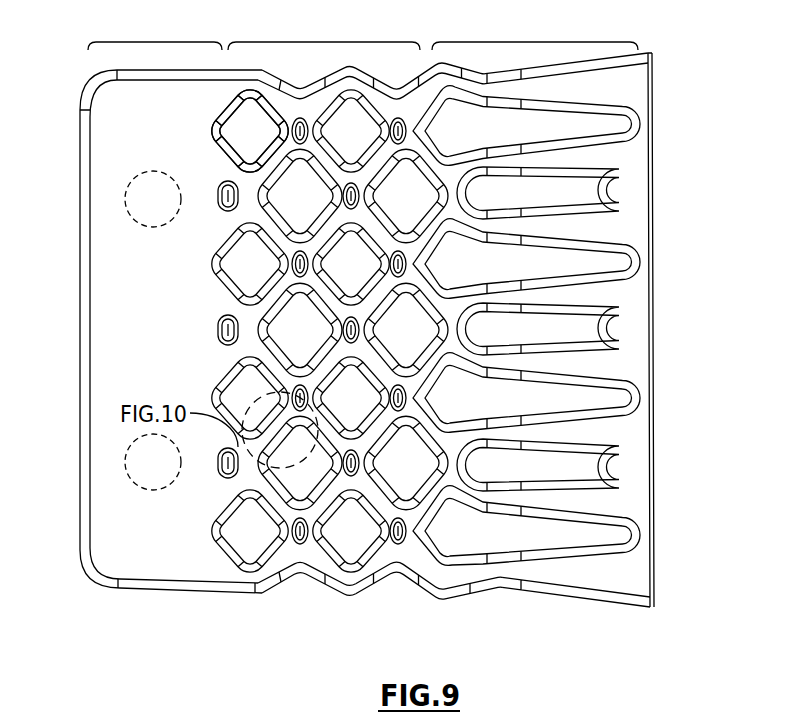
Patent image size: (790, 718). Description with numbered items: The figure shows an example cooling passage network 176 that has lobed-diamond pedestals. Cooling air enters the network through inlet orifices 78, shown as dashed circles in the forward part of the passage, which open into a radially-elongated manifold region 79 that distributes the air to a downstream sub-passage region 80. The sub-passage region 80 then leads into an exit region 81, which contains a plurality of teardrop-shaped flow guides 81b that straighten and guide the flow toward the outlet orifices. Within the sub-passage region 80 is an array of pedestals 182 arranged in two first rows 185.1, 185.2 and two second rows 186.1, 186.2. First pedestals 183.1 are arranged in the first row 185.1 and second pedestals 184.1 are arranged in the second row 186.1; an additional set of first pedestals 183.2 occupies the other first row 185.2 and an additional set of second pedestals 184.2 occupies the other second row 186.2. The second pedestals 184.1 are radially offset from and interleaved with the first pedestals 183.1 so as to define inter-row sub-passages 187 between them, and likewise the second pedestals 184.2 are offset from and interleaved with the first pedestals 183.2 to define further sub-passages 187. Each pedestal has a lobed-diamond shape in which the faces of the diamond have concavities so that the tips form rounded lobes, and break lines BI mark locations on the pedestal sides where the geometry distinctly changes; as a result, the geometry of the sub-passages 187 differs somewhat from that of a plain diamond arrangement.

The manifold region 79 is at (157, 42).
The sub-passage region 80 is at (326, 42).
The exit region 81 is at (533, 42).
The flow guides 81b is at (607, 540).
The inlet orifice 78 is at (127, 200).
The break lines BI is at (228, 110).
The cooling passage network 176 is at (542, 622).
The array of pedestals 182 is at (205, 560).
The first pedestals 183.1 is at (253, 142).
The additional set of first pedestals 183.2 is at (354, 262).
The second pedestals 184.1 is at (290, 197).
The additional set of second pedestals 184.2 is at (400, 456).
The first row 185.1 is at (256, 588).
The other first row 185.2 is at (350, 592).
The second row 186.1 is at (287, 572).
The other second row 186.2 is at (410, 537).
The inter-row sub-passages 187 is at (252, 452).